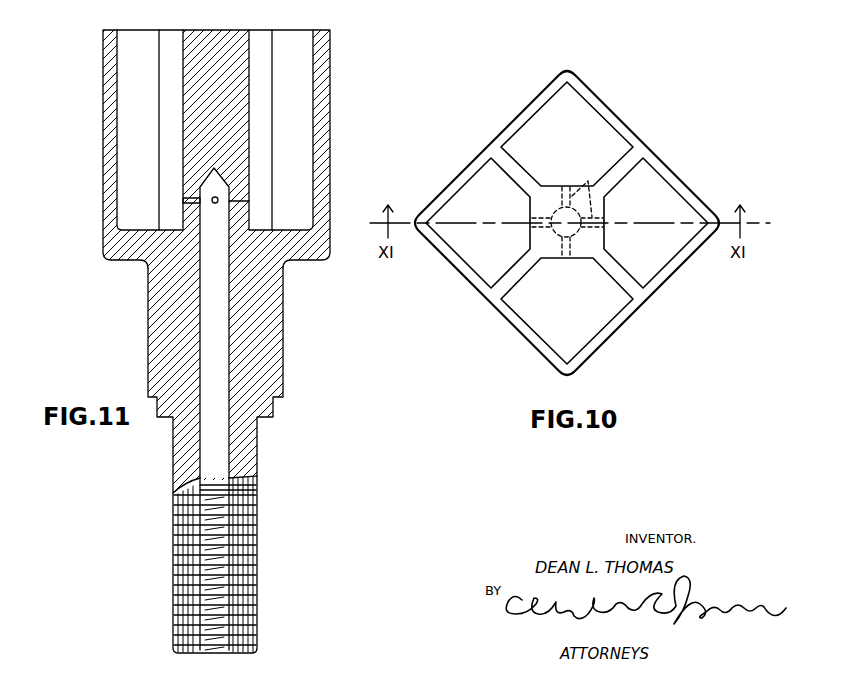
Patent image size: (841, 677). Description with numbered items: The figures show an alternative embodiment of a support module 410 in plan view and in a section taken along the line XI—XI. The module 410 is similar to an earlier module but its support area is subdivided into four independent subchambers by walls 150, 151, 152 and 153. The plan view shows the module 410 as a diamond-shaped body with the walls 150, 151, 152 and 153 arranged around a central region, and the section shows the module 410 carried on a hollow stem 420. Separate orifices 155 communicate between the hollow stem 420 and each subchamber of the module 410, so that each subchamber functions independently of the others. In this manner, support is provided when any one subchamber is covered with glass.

In FIG. 11, the wall 150 is at (167, 86).
In FIG. 10, the wall 150 is at (527, 166).
In FIG. 11, the wall 151 is at (263, 108).
In FIG. 10, the wall 151 is at (618, 172).
In FIG. 10, the wall 152 is at (623, 282).
In FIG. 10, the wall 153 is at (514, 277).
In FIG. 11, the orifice 155 is at (213, 204).
In FIG. 10, the orifice 155 is at (588, 181).
In FIG. 11, the module 410 is at (83, 176).
In FIG. 11, the hollow stem 420 is at (283, 350).